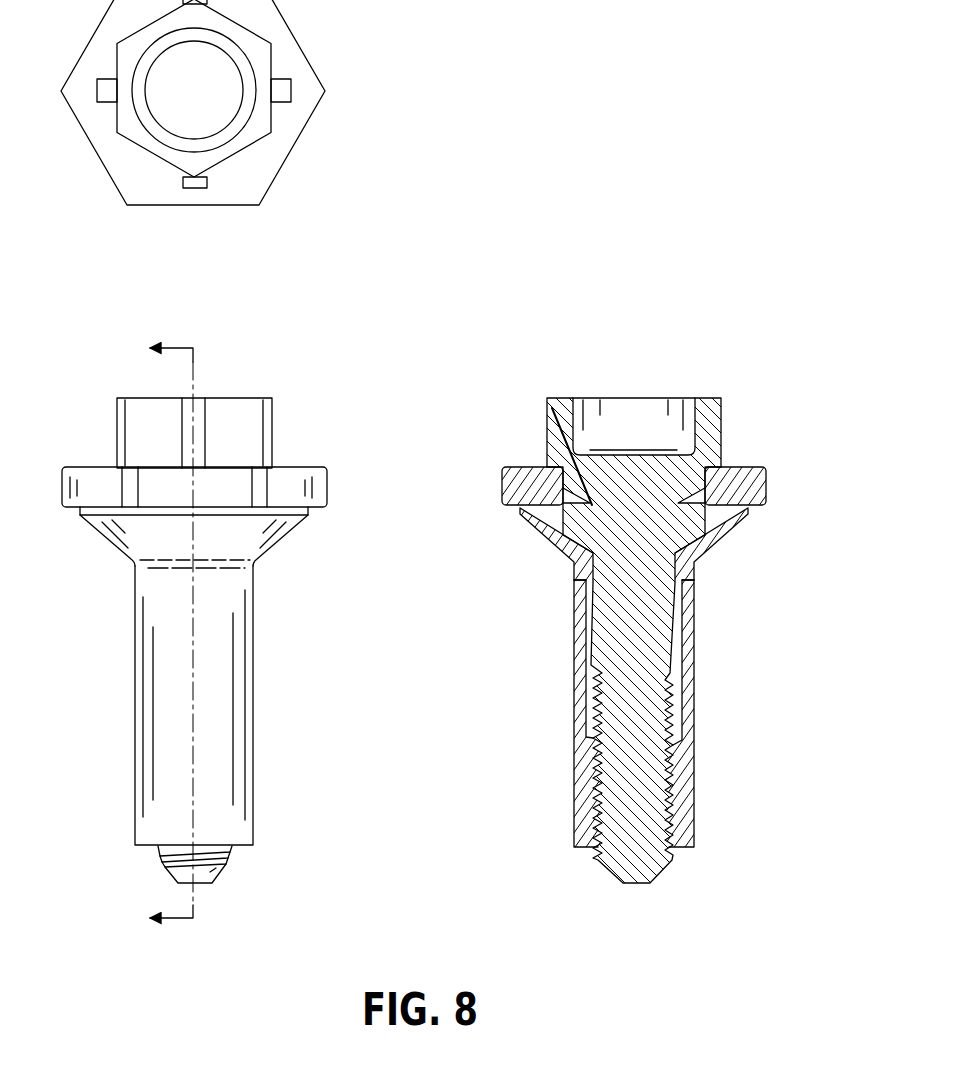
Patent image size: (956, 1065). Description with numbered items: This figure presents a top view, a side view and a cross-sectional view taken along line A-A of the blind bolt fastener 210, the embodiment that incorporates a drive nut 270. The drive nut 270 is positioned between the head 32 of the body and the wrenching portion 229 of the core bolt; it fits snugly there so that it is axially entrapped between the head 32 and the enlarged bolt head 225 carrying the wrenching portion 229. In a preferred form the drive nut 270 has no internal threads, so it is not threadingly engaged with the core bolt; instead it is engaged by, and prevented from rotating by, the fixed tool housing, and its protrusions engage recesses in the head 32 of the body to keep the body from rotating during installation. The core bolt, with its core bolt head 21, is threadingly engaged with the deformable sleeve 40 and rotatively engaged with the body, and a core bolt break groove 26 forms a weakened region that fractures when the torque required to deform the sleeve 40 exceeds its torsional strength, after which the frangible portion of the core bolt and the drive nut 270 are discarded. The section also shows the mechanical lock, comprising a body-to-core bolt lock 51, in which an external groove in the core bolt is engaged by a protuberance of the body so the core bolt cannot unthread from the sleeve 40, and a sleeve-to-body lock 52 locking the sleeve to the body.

The blind bolt fastener 210 is at (498, 626).
The enlarged bolt head 225 is at (118, 422).
The wrenching portion 229 is at (244, 418).
The drive nut 270 is at (327, 485).
The deformable sleeve 40 is at (253, 710).
The core bolt break groove 26 is at (575, 480).
The head 32 is at (518, 514).
The core bolt head 21 is at (731, 537).
The sleeve-to-body lock 52 is at (722, 575).
The body-to-core bolt lock 51 is at (722, 663).